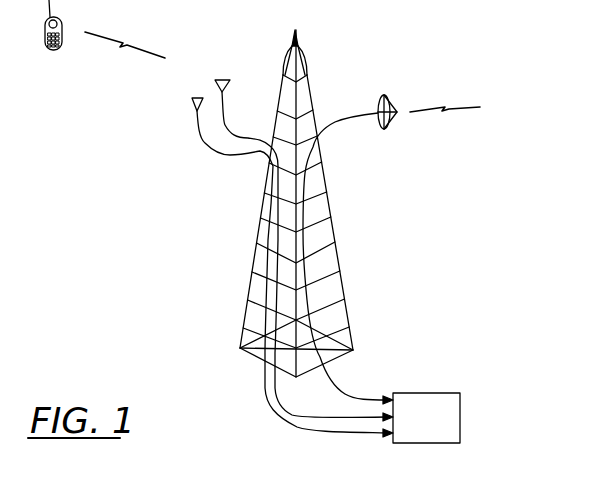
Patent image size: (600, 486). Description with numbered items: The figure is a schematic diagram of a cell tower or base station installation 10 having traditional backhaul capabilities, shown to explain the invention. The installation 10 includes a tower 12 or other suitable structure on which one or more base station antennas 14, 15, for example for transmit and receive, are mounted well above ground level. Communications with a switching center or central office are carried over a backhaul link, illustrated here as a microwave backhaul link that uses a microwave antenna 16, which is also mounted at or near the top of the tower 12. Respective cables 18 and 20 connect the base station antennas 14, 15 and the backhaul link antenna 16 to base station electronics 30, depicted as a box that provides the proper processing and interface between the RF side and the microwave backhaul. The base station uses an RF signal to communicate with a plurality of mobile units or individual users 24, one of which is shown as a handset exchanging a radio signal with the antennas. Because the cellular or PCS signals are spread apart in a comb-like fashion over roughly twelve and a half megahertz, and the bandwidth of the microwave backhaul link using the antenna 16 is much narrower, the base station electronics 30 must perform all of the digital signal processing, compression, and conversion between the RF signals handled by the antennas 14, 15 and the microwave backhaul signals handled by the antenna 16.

The installation 10 is at (188, 240).
The tower 12 is at (324, 186).
The base station antenna 14 is at (193, 102).
The base station antenna 15 is at (220, 78).
The microwave antenna 16 is at (383, 95).
The cable 18 is at (248, 301).
The cable 20 is at (315, 263).
The mobile unit 24 is at (53, 50).
The base station electronics 30 is at (443, 393).